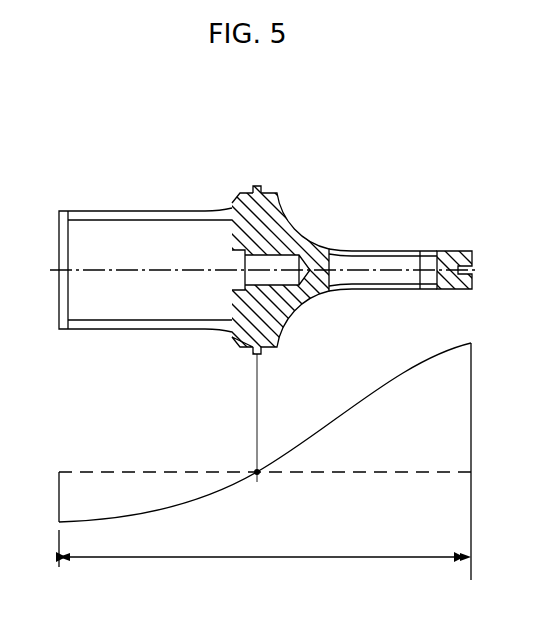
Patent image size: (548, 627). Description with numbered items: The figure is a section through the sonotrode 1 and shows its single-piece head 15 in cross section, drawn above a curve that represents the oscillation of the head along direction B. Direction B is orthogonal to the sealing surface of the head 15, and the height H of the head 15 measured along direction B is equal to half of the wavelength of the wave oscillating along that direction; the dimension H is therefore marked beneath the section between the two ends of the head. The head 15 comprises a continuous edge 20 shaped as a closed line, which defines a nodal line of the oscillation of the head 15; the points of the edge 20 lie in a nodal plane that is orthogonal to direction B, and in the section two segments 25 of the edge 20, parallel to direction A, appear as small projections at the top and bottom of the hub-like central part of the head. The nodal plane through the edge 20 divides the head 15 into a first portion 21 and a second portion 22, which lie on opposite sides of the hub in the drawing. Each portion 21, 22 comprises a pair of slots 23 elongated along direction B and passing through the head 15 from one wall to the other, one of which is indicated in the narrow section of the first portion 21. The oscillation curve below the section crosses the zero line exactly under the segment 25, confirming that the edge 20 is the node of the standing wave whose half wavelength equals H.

The sonotrode 1 is at (157, 125).
The head 15 is at (102, 185).
The continuous edge 20 is at (257, 180).
The second portion 22 is at (129, 300).
The segments 25 is at (262, 187).
The slots 23 is at (373, 253).
The first portion 21 is at (462, 243).
The height H is at (265, 545).
The direction B is at (402, 473).